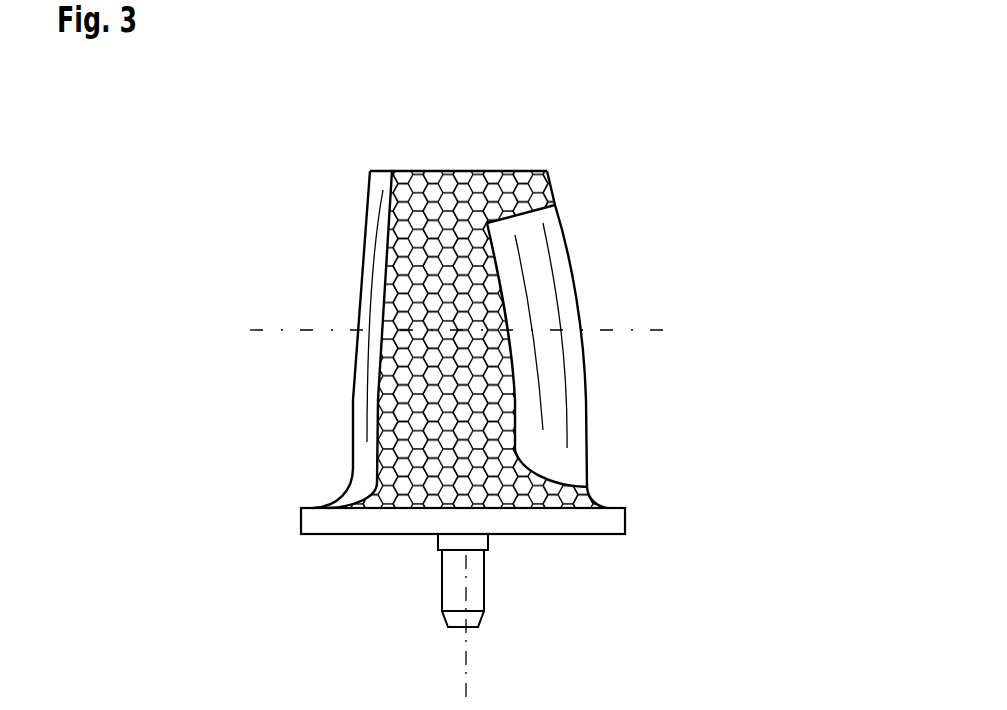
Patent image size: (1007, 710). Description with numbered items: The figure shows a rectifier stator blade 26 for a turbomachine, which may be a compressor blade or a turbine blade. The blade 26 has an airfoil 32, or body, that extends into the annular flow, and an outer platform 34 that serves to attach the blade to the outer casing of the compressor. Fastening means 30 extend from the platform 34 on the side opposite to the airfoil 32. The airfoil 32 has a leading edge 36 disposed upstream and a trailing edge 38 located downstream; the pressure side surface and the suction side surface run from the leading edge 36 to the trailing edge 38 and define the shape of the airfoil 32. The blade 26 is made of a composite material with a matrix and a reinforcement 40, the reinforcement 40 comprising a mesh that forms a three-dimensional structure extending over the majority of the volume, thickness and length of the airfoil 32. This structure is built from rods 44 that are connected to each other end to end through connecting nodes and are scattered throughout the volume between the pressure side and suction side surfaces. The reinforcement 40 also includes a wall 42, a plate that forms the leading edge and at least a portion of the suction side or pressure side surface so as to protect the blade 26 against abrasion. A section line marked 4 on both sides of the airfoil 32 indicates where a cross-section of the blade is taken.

The rectifier stator blade 26 is at (320, 122).
The fastening means 30 is at (465, 596).
The airfoil 32 is at (680, 392).
The outer platform 34 is at (300, 521).
The leading edge 36 is at (366, 235).
The trailing edge 38 is at (566, 233).
The reinforcement 40 is at (408, 378).
The wall 42 is at (360, 453).
The rods 44 is at (492, 222).
The section line 4- 4 is at (273, 276).